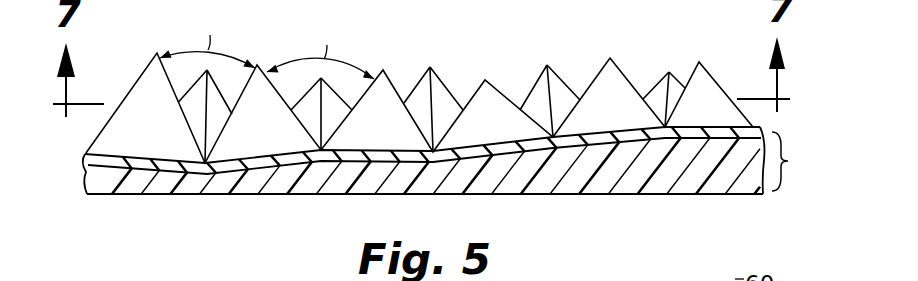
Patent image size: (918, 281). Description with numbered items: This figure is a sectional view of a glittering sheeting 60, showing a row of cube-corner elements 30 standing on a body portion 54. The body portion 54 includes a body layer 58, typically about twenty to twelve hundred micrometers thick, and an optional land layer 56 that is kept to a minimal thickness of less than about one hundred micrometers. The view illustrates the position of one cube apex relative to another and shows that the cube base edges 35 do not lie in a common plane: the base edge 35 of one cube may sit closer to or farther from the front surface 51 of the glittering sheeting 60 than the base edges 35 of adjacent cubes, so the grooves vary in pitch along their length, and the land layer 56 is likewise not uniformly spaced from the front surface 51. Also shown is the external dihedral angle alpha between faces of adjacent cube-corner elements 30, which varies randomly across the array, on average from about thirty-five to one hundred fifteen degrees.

The cube-corner elements 30 is at (511, 88).
The base edges 35 is at (745, 132).
The front surface 51 is at (222, 196).
The body portion 54 is at (798, 161).
The land layer 56 is at (84, 155).
The body layer 58 is at (84, 185).
The glittering sheeting 60 is at (653, 35).